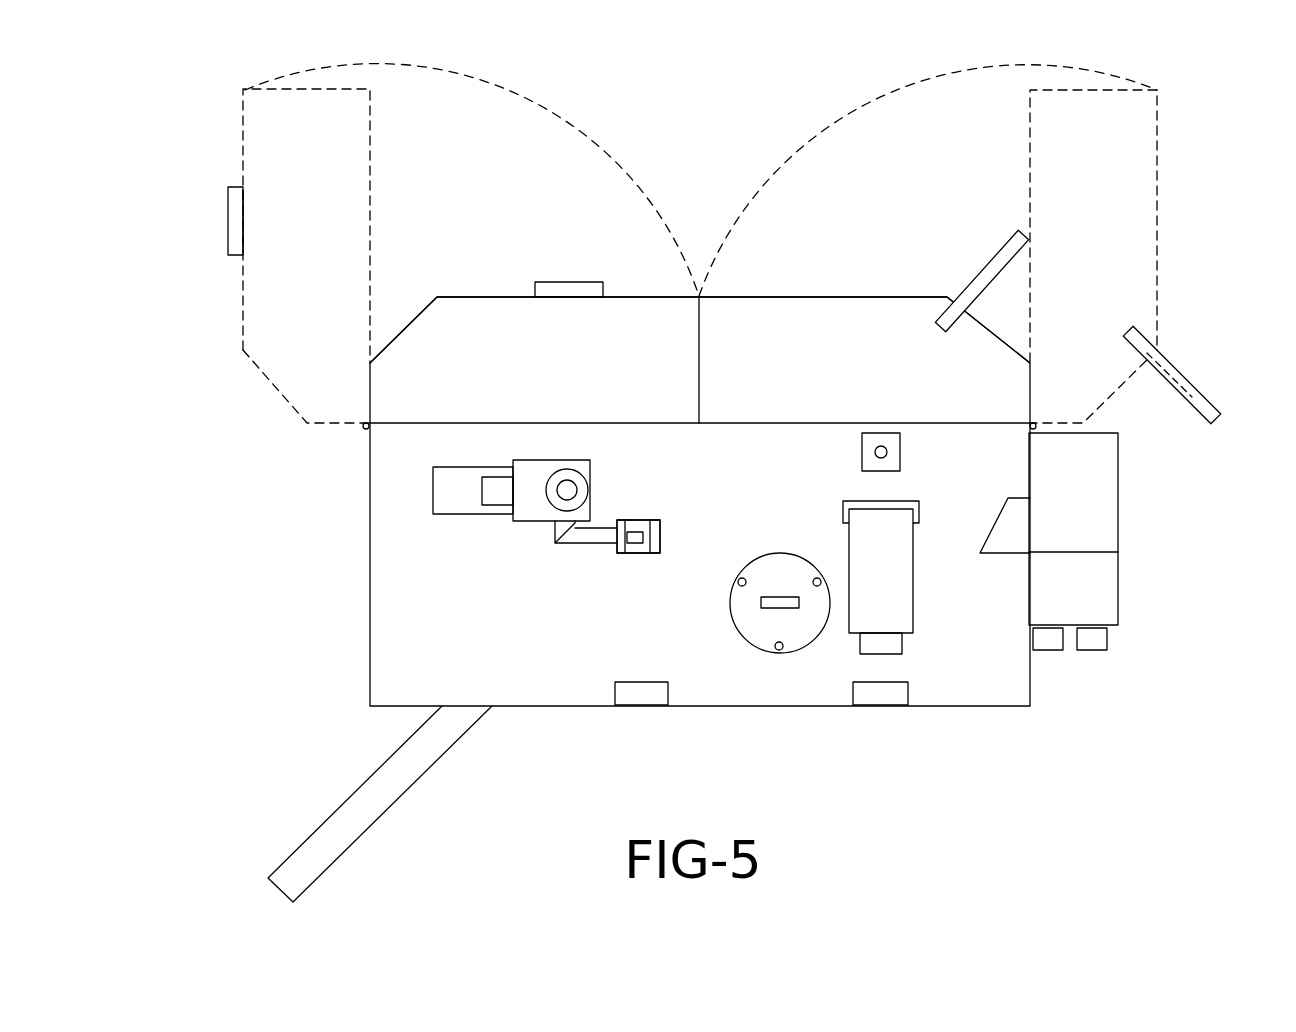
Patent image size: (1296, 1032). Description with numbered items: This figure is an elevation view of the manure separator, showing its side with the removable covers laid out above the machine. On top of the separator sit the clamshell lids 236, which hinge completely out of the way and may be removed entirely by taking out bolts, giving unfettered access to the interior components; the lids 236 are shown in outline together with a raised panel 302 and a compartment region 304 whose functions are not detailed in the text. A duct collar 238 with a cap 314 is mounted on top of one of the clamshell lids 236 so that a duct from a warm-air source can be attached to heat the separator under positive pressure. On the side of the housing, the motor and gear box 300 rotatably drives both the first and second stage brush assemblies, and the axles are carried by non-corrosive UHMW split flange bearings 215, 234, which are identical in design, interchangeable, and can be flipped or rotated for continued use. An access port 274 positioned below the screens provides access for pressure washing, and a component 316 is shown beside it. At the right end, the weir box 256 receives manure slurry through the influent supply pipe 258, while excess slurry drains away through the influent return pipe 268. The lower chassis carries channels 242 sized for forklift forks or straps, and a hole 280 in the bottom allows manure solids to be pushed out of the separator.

The door panel 302 is at (283, 135).
The cap 314 is at (228, 187).
The duct collar 238 is at (237, 228).
The clamshell lids 236 is at (295, 288).
The compartment 304 is at (527, 377).
The bearings 215 is at (895, 448).
The weir box 256 is at (1118, 538).
The motor and gear box 300 is at (532, 522).
The bearings 234 is at (635, 555).
The hole 280 is at (397, 706).
The channels 242 is at (635, 692).
The access port 274 is at (760, 625).
The battery 316 is at (859, 607).
The influent return pipe 268 is at (1090, 653).
The influent supply pipe 258 is at (1050, 650).